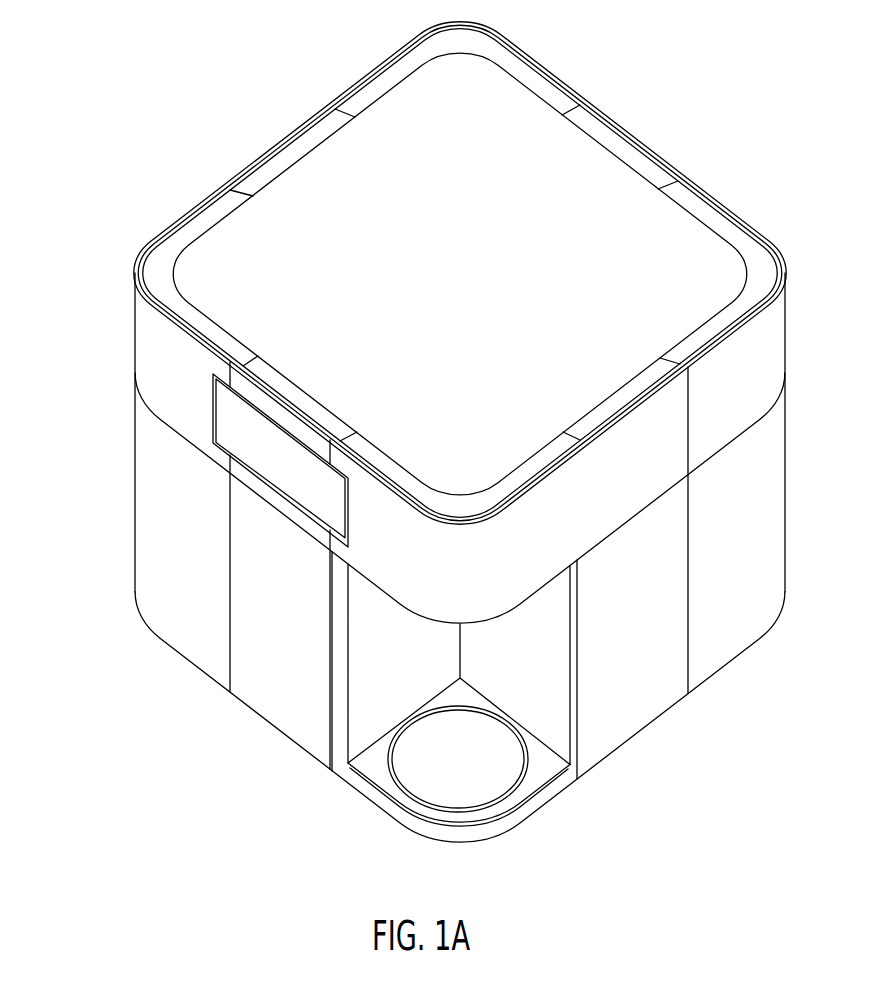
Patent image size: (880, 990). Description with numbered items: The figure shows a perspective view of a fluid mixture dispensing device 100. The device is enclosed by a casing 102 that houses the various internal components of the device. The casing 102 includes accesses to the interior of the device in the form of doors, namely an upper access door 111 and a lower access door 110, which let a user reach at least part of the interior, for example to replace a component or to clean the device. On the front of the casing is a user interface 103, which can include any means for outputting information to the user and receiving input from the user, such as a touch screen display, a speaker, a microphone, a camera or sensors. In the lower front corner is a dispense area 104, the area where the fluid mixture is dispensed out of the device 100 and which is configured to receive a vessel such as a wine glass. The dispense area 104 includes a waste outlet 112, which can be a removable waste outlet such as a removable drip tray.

The fluid mixture dispensing device 100 is at (748, 101).
The casing 102 is at (777, 345).
The user interface 103 is at (228, 437).
The dispense area 104 is at (551, 695).
The lower access door 110 is at (175, 597).
The upper access door 111 is at (145, 347).
The waste outlet 112 is at (426, 801).